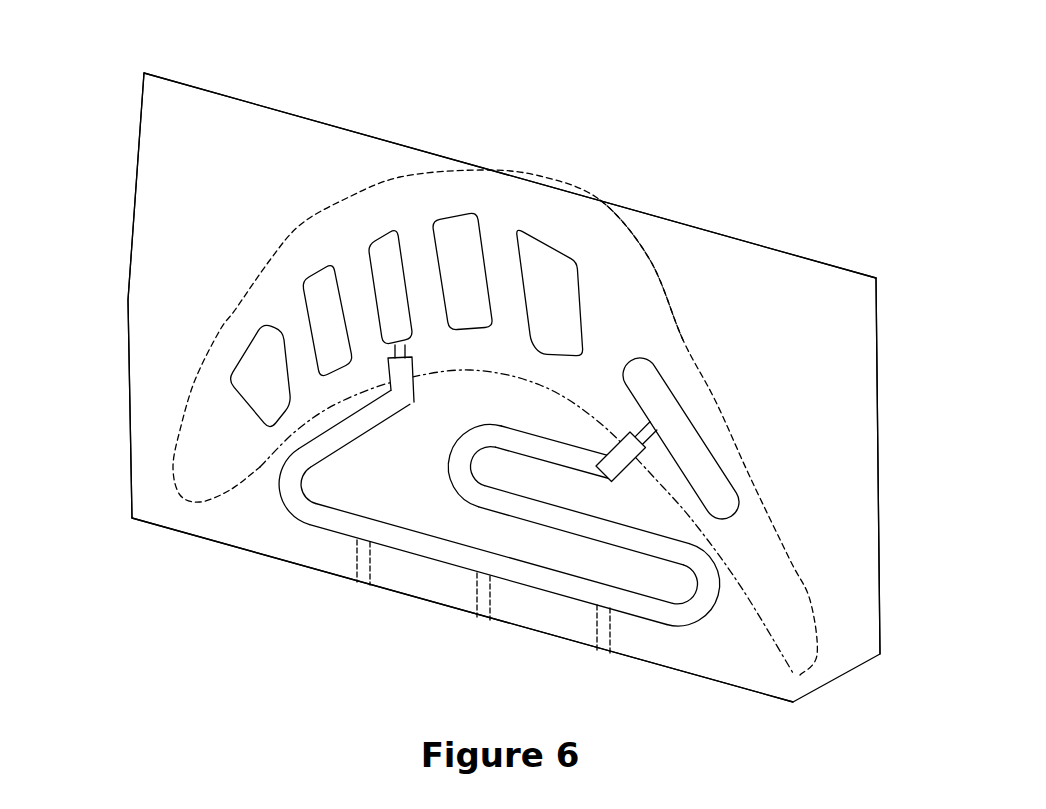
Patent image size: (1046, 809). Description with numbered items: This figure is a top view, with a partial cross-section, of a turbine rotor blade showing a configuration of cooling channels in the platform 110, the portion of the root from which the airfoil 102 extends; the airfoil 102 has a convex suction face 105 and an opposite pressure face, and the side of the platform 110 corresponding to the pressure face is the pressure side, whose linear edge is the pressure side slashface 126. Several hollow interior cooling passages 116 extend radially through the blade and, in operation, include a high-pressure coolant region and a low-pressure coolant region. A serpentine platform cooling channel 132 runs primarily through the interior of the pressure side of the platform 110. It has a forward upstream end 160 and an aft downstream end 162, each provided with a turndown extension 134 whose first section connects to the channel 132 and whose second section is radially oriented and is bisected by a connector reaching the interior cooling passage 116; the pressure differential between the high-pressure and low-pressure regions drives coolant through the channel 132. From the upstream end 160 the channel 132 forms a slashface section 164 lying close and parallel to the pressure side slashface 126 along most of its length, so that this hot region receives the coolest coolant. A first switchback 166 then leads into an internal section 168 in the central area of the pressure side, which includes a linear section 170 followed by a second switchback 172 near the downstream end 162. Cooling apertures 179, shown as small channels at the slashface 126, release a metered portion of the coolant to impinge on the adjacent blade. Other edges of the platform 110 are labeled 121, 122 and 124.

The airfoil 102 is at (602, 197).
The suction face 105 is at (672, 304).
The platform 110 is at (180, 180).
The interior cooling passage 116 is at (390, 282).
The right edge 121 is at (882, 488).
The top edge 122 is at (363, 131).
The left edge 124 is at (137, 262).
The pressure side slashface 126 is at (712, 682).
The platform cooling channel 132 is at (310, 515).
The turndown extension 134 is at (405, 363).
The upstream end 160 is at (412, 400).
The downstream end 162 is at (604, 469).
The slashface section 164 is at (347, 523).
The first switchback 166 is at (700, 597).
The internal section 168 is at (504, 525).
The linear section 170 is at (549, 517).
The channel upper U-turn 172 is at (463, 455).
The cooling apertures 179 is at (372, 563).